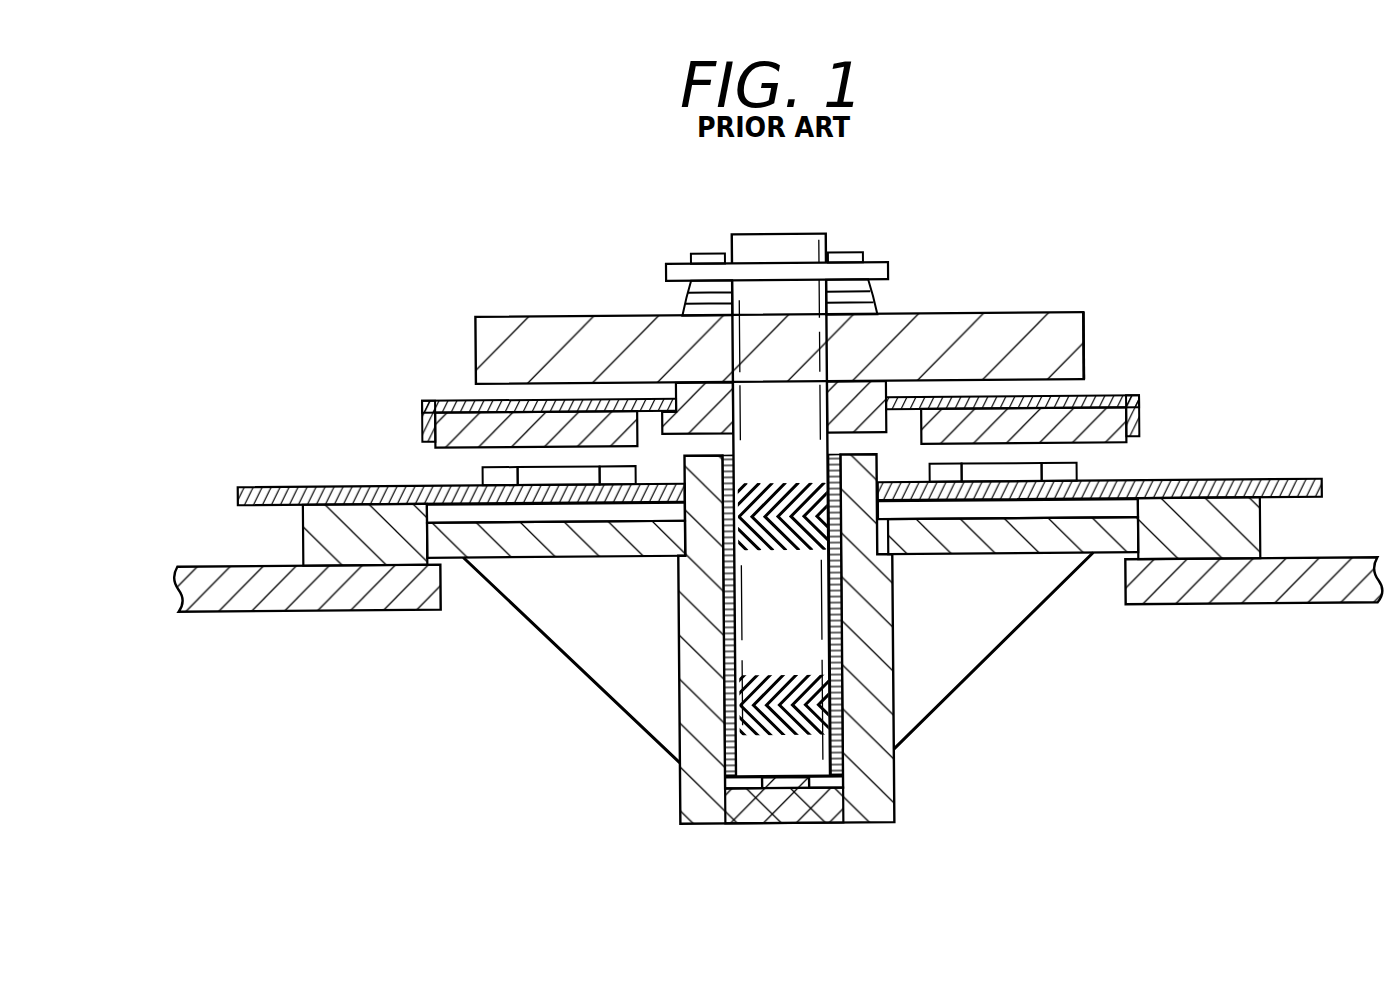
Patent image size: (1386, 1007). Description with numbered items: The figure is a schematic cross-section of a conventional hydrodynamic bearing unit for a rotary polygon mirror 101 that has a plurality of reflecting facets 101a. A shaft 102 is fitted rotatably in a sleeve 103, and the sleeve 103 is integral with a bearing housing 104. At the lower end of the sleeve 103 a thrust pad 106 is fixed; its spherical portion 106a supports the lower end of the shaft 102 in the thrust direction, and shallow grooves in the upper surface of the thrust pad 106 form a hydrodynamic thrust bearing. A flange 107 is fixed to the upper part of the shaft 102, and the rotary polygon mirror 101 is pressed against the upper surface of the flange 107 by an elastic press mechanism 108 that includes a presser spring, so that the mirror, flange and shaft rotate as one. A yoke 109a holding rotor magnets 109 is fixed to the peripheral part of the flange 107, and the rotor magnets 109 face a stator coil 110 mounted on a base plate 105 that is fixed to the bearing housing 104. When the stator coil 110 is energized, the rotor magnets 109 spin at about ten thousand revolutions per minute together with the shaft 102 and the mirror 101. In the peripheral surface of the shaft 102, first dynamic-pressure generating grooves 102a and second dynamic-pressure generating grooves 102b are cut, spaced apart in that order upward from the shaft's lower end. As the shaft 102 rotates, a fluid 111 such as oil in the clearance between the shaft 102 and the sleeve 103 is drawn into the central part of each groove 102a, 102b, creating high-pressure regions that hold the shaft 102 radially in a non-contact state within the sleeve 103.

The rotary polygon mirror 101 is at (1022, 320).
The reflecting facets 101a is at (1086, 335).
The shaft 102 is at (806, 233).
The first dynamic-pressure generating grooves 102a is at (747, 660).
The second dynamic-pressure generating grooves 102b is at (753, 552).
The sleeve 103 is at (886, 789).
The bearing housing 104 is at (1250, 536).
The base plate 105 is at (1300, 483).
The thrust pad 106 is at (742, 819).
The spherical portion 106a is at (794, 781).
The flange 107 is at (688, 388).
The elastic press mechanism 108 is at (669, 256).
The rotor magnets 109 is at (437, 444).
The yoke 109a is at (447, 401).
The stator coil 110 is at (1078, 468).
The fluid 111 is at (722, 763).